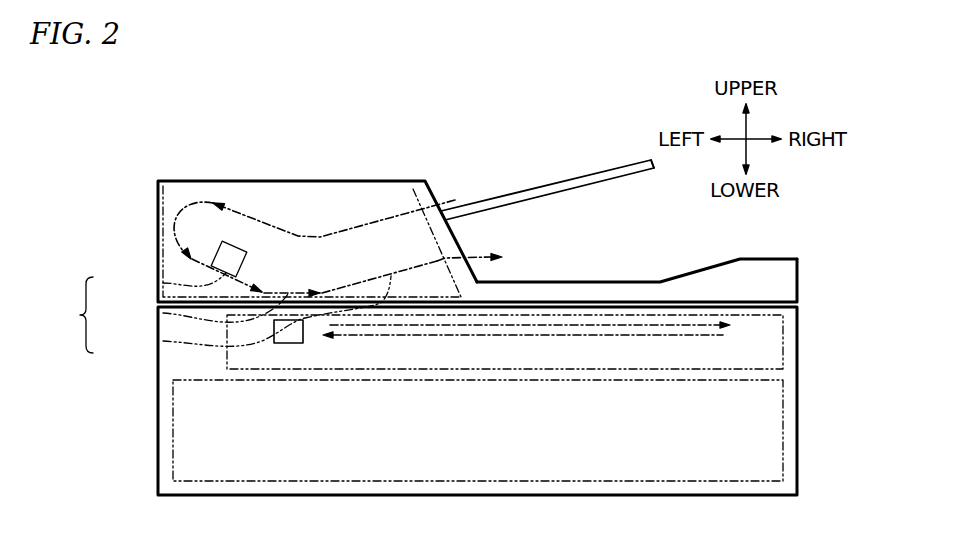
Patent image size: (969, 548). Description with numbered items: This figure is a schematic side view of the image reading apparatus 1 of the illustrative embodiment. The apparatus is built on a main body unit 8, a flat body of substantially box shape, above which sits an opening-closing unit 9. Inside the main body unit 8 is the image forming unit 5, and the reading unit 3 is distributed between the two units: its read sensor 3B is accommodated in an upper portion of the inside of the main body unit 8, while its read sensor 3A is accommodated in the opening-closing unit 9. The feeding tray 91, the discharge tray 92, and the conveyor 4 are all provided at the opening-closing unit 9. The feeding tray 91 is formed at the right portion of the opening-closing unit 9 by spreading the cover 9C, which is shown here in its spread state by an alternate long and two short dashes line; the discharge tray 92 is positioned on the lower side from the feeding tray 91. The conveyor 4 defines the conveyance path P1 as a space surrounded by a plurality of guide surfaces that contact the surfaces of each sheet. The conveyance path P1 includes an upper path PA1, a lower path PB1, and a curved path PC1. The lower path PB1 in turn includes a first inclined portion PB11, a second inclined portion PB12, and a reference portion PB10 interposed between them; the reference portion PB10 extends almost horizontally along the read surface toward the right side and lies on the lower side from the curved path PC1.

The image reading apparatus 1 is at (455, 137).
The reading unit 3 is at (747, 352).
The read sensor 3A is at (240, 257).
The read sensor 3B is at (290, 335).
The conveyor 4 is at (327, 183).
The image forming unit 5 is at (747, 437).
The main body unit 8 is at (156, 450).
The opening-closing unit 9 is at (150, 182).
The cover 9C is at (630, 180).
The feeding tray 91 is at (596, 171).
The discharge tray 92 is at (602, 282).
The conveyance path P1 is at (483, 259).
The upper path PA1 is at (368, 214).
The lower path PB1 is at (66, 315).
The reference portion PB10 is at (163, 313).
The first inclined portion PB11 is at (163, 283).
The second inclined portion PB12 is at (163, 341).
The curved path PC1 is at (165, 216).